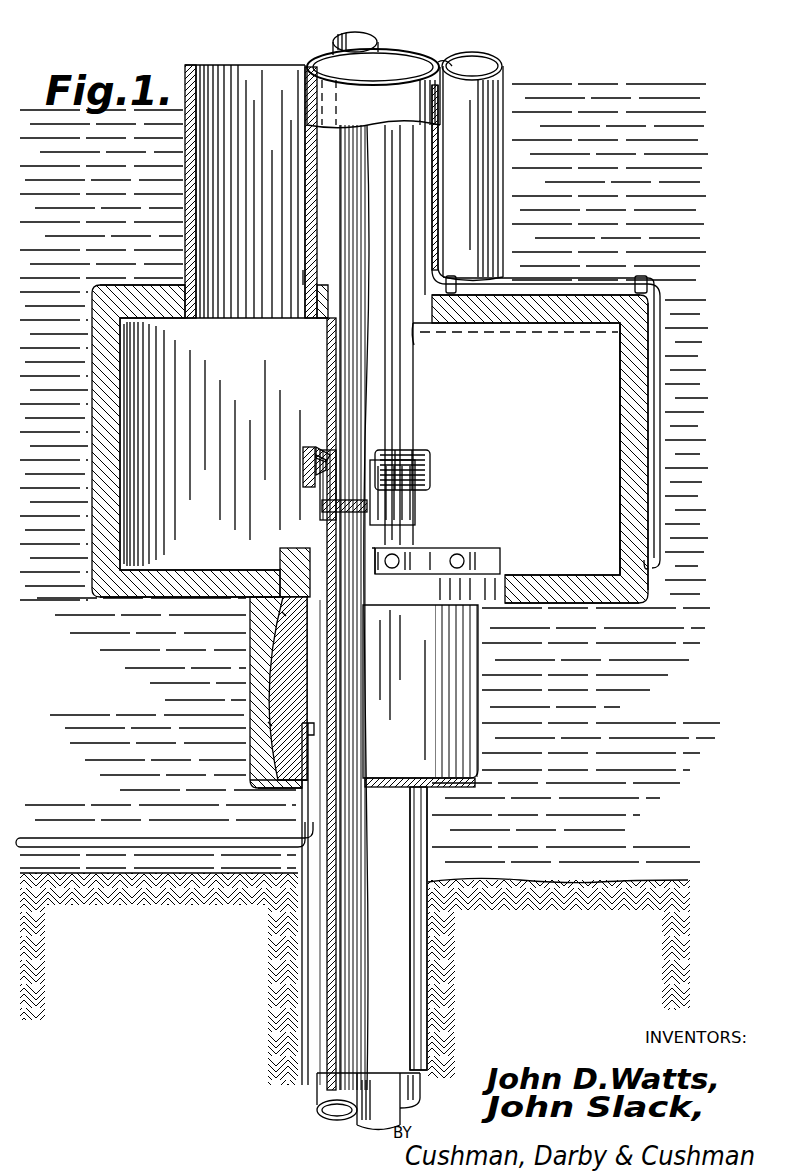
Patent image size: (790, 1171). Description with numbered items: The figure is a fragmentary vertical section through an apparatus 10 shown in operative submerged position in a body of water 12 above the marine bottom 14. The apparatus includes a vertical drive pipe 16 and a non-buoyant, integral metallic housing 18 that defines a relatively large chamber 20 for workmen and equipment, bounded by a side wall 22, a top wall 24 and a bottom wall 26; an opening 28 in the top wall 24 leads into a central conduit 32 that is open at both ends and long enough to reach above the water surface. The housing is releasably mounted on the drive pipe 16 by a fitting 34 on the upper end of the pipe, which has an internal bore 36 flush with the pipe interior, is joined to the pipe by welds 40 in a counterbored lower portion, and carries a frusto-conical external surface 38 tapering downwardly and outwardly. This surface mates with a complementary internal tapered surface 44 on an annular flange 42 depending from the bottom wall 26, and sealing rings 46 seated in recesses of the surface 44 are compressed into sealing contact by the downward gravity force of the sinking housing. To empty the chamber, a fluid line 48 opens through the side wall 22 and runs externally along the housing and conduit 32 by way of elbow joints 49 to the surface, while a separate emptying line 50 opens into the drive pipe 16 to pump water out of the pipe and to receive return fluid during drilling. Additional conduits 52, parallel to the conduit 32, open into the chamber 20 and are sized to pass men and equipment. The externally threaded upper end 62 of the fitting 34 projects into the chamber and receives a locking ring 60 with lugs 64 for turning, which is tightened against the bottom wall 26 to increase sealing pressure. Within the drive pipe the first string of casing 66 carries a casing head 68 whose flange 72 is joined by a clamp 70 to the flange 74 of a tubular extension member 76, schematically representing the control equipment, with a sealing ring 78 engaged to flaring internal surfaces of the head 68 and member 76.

The apparatus 10 is at (675, 325).
The body of water 12 is at (370, 476).
The marine bottom 14 is at (536, 878).
The drive pipe 16 is at (300, 800).
The housing 18 is at (90, 600).
The chamber 20 is at (556, 444).
The side wall 22 is at (632, 500).
The top wall 24 is at (160, 300).
The bottom wall 26 is at (180, 585).
The opening 28 is at (422, 325).
The central conduit 32 is at (432, 66).
The fitting 34 is at (276, 766).
The internal bore 36 is at (333, 668).
The tapering external surface 38 is at (256, 750).
The welds 40 is at (400, 786).
The annular flange 42 is at (255, 642).
The internal tapered surface 44 is at (278, 670).
The sealing rings 46 is at (284, 616).
The fluid line 48 is at (438, 172).
The elbow joints 49 is at (456, 280).
The emptying line 50 is at (140, 838).
The additional conduits 52 is at (505, 66).
The locking ring 60 is at (320, 548).
The upper end of fitting 62 is at (303, 559).
The lugs 64 is at (440, 556).
The casing 66 is at (320, 976).
The casing head 68 is at (318, 497).
The clamp 70 is at (303, 462).
The flange 72 is at (316, 470).
The flange 74 is at (316, 450).
The tubular extension member 76 is at (334, 60).
The sealing ring 78 is at (337, 470).